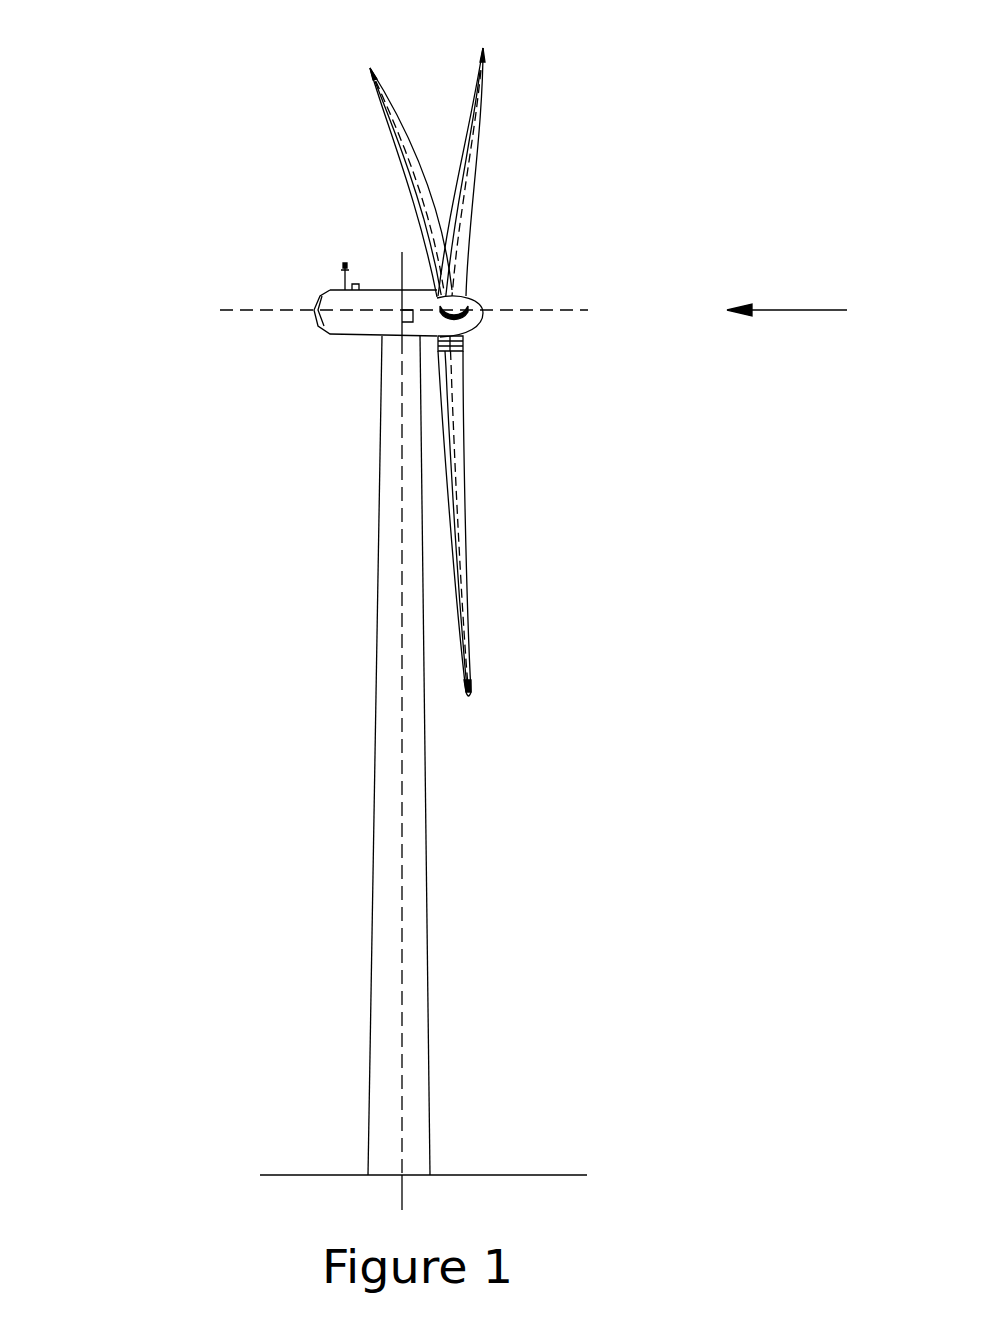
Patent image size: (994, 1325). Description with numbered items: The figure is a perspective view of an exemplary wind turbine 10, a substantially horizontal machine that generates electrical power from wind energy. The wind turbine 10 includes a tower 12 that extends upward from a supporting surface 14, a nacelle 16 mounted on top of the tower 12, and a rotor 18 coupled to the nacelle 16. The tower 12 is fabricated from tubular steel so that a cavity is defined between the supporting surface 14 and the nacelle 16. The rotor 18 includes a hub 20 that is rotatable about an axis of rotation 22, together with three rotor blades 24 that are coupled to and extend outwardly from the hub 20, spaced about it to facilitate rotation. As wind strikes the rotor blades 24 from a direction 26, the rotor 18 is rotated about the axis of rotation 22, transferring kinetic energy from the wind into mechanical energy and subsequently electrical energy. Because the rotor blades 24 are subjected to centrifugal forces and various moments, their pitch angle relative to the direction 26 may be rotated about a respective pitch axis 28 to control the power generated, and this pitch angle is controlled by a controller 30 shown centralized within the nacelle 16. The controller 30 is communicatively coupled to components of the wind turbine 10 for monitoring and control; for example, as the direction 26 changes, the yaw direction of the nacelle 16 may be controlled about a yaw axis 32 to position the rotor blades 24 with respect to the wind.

The wind turbine 10 is at (137, 83).
The tower 12 is at (373, 926).
The supporting surface 14 is at (323, 1173).
The nacelle 16 is at (346, 333).
The rotor 18 is at (483, 206).
The hub 20 is at (476, 306).
The axis of rotation 22 is at (548, 312).
The rotor blade 24 is at (394, 140).
The direction 26 is at (808, 308).
The pitch axis 28 is at (357, 75).
The controller 30 is at (413, 305).
The yaw axis 32 is at (402, 858).